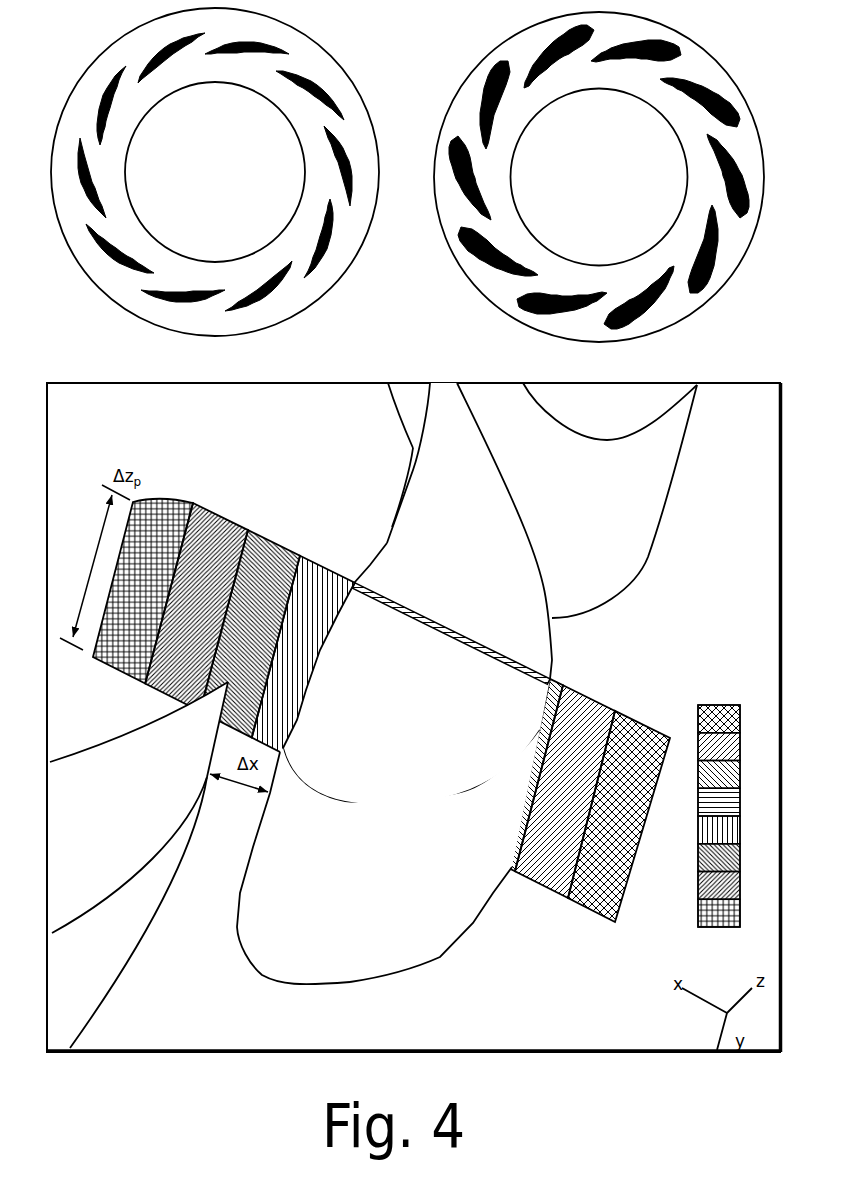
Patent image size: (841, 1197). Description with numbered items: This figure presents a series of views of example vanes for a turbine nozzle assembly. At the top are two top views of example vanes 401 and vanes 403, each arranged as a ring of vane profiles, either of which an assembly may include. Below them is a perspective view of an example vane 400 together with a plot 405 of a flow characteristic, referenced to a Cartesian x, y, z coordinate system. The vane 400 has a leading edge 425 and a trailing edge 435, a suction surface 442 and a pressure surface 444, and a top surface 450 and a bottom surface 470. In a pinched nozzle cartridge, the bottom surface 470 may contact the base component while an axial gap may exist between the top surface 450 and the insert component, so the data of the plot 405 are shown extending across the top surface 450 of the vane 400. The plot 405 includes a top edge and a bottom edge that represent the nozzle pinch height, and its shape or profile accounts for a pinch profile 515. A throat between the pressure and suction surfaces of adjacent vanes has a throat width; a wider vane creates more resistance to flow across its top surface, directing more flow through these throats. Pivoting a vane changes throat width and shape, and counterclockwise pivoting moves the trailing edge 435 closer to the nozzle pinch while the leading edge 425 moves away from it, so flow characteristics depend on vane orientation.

The vane 400 is at (574, 647).
The vanes 401 is at (233, 185).
The vanes 403 is at (617, 195).
The plot 405 is at (733, 690).
The leading edge 425 is at (318, 892).
The trailing edge 435 is at (207, 777).
The suction surface 442 is at (457, 873).
The pressure surface 444 is at (403, 490).
The top surface 450 is at (477, 573).
The bottom surface 470 is at (460, 957).
The pinch profile 515 is at (161, 489).